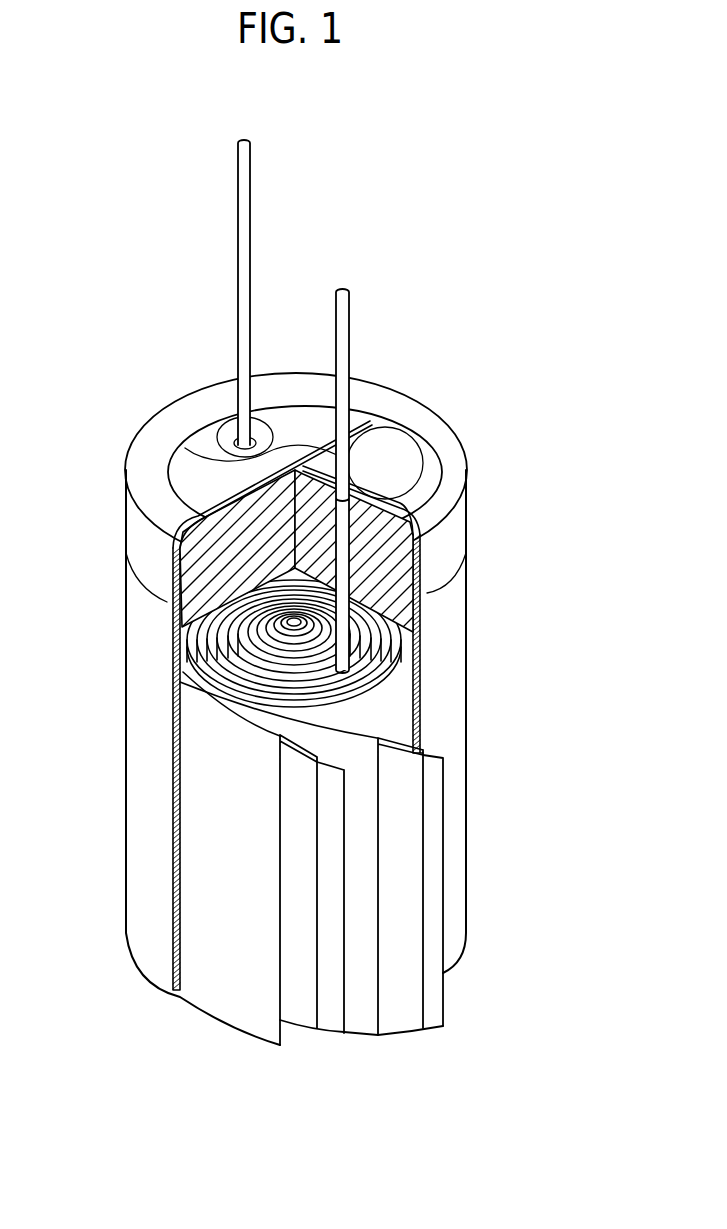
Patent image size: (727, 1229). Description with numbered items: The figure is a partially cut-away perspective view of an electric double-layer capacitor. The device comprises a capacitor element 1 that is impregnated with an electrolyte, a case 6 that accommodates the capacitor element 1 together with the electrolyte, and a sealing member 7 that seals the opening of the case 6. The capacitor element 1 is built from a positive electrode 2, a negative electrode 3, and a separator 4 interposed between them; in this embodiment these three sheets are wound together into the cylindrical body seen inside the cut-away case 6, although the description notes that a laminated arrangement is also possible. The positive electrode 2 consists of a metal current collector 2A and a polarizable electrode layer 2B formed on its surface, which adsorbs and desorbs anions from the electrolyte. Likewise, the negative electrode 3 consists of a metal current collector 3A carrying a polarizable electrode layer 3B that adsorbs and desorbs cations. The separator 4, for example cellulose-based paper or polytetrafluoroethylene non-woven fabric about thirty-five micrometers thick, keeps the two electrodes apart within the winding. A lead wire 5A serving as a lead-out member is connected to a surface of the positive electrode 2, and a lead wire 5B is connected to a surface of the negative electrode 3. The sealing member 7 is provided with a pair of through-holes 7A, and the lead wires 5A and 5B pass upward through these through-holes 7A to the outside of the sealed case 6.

The capacitor element 1 is at (247, 658).
The positive electrode 2 is at (479, 886).
The current collector 2A is at (432, 793).
The polarizable electrode layer 2B is at (405, 837).
The negative electrode 3 is at (430, 890).
The current collector 3A is at (328, 893).
The polarizable electrode layer 3B is at (297, 943).
The separator 4 is at (367, 1020).
The lead wire 5A is at (250, 183).
The lead wire 5B is at (348, 336).
The case 6 is at (447, 616).
The sealing member 7 is at (228, 573).
The through-holes 7A is at (402, 560).